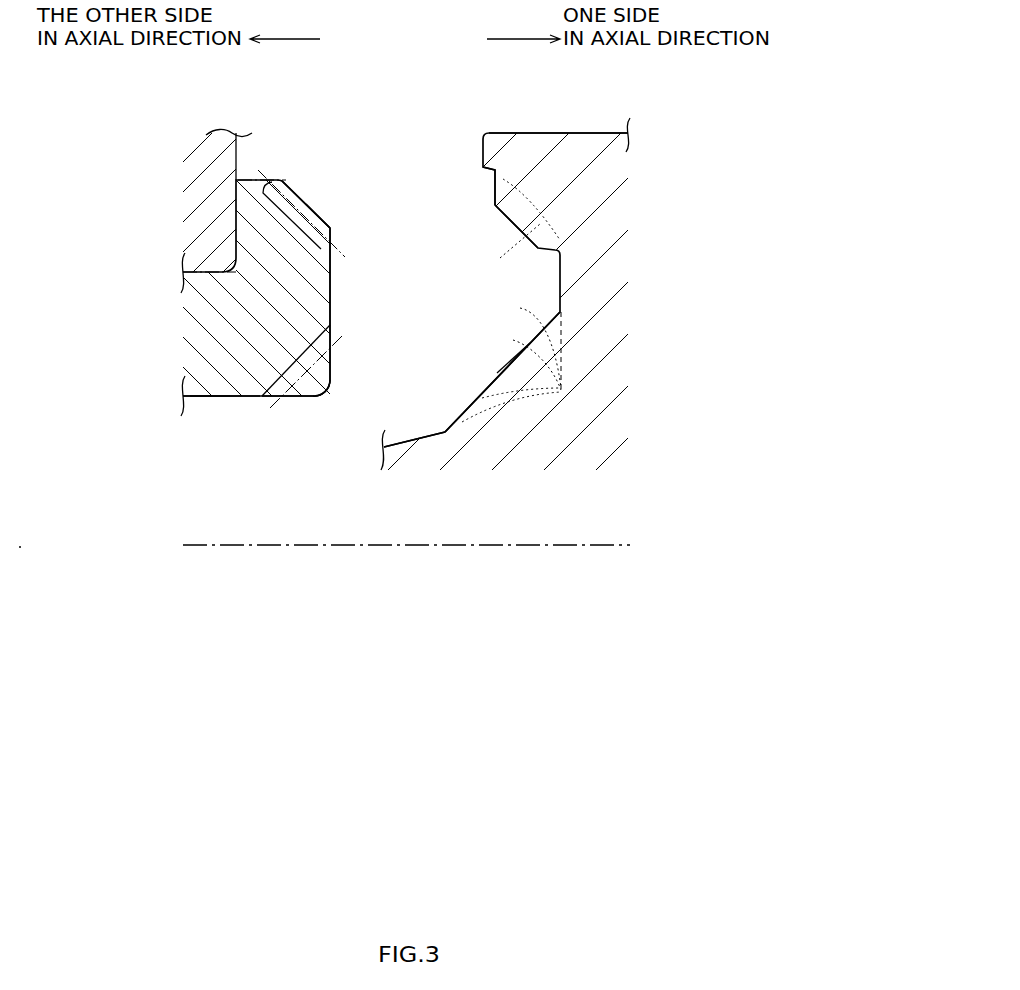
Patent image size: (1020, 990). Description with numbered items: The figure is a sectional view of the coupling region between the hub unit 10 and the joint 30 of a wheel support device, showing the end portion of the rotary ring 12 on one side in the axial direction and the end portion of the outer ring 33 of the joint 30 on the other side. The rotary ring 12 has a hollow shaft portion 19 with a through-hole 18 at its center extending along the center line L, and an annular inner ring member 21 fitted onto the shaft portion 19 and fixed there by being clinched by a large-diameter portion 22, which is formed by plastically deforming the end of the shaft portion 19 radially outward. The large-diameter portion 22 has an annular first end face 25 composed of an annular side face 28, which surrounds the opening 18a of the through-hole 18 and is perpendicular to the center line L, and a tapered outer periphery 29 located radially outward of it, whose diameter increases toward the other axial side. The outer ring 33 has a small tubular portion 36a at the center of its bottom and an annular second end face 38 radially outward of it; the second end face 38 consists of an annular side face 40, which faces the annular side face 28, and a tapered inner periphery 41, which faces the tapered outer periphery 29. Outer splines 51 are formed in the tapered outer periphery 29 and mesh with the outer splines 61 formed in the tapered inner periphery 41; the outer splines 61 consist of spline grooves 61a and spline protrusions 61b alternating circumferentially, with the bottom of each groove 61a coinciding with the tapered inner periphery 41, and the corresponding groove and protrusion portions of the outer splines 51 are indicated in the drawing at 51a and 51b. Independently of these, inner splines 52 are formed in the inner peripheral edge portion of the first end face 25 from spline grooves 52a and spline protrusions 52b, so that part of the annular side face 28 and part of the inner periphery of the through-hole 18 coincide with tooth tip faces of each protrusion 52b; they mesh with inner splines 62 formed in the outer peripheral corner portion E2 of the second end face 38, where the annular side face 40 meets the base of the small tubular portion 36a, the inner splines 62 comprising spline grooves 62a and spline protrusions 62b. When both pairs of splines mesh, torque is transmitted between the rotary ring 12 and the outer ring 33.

The hub unit 10 is at (134, 267).
The rotary ring 12 is at (247, 406).
The through-hole 18 is at (213, 397).
The opening 18a is at (326, 398).
The shaft portion 19 is at (196, 334).
The inner ring member 21 is at (197, 178).
The large-diameter portion 22 is at (252, 219).
The first end face 25 is at (360, 235).
The annular side face 28 is at (333, 293).
The tapered outer periphery 29 is at (308, 181).
The joint 30 is at (587, 121).
The outer ring 33 is at (605, 192).
The small tubular portion 36a is at (413, 441).
The second end face 38 is at (482, 293).
The annular side face 40 is at (520, 308).
The tapered inner periphery 41 is at (509, 253).
The outer splines 51 is at (314, 191).
The chamfer inner line 51a is at (276, 188).
The chamfer lower portion 51b is at (322, 212).
The inner splines 52 is at (302, 406).
The spline grooves 52a is at (315, 340).
The spline protrusions 52b is at (328, 384).
The outer splines 61 is at (499, 226).
The spline grooves 61a is at (503, 179).
The spline protrusions 61b is at (499, 214).
The inner splines 62 is at (472, 382).
The spline grooves 62a is at (518, 355).
The spline protrusions 62b is at (497, 372).
The outer peripheral corner portion E2 is at (442, 396).
The center line L is at (563, 546).